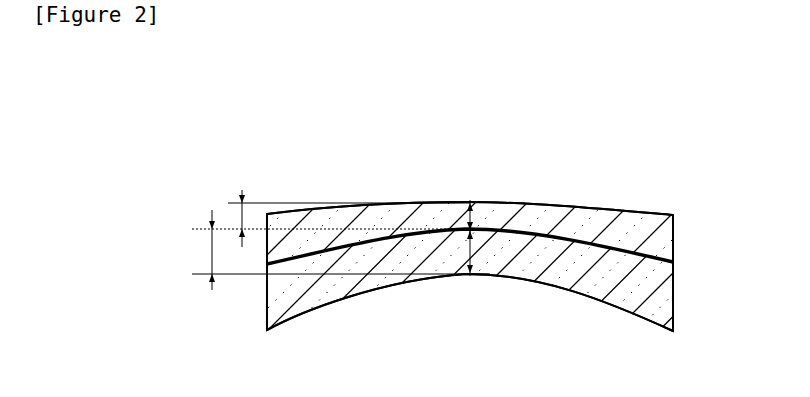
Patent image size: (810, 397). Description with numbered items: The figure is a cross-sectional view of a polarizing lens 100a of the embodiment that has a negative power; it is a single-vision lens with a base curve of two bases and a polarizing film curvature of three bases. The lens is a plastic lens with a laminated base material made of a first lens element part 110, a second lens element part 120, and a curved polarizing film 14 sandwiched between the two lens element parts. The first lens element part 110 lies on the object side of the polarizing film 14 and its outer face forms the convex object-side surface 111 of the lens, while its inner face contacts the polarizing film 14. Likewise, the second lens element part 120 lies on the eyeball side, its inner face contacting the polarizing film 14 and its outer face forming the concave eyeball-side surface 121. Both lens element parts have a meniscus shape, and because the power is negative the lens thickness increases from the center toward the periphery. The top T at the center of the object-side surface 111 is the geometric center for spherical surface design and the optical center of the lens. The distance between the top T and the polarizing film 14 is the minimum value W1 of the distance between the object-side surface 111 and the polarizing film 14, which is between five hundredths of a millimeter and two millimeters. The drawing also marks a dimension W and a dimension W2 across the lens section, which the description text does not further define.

The polarizing lens 100a is at (438, 111).
The first lens element part 110 is at (635, 223).
The object-side surface 111 is at (582, 207).
The second lens element part 120 is at (620, 317).
The eyeball-side surface 121 is at (572, 293).
The polarizing film 14 is at (660, 257).
The top T is at (472, 199).
The width W is at (473, 252).
The minimum value of the distance between the object-side surface and the polarizing W1 is at (237, 221).
The dimension W2 is at (209, 247).